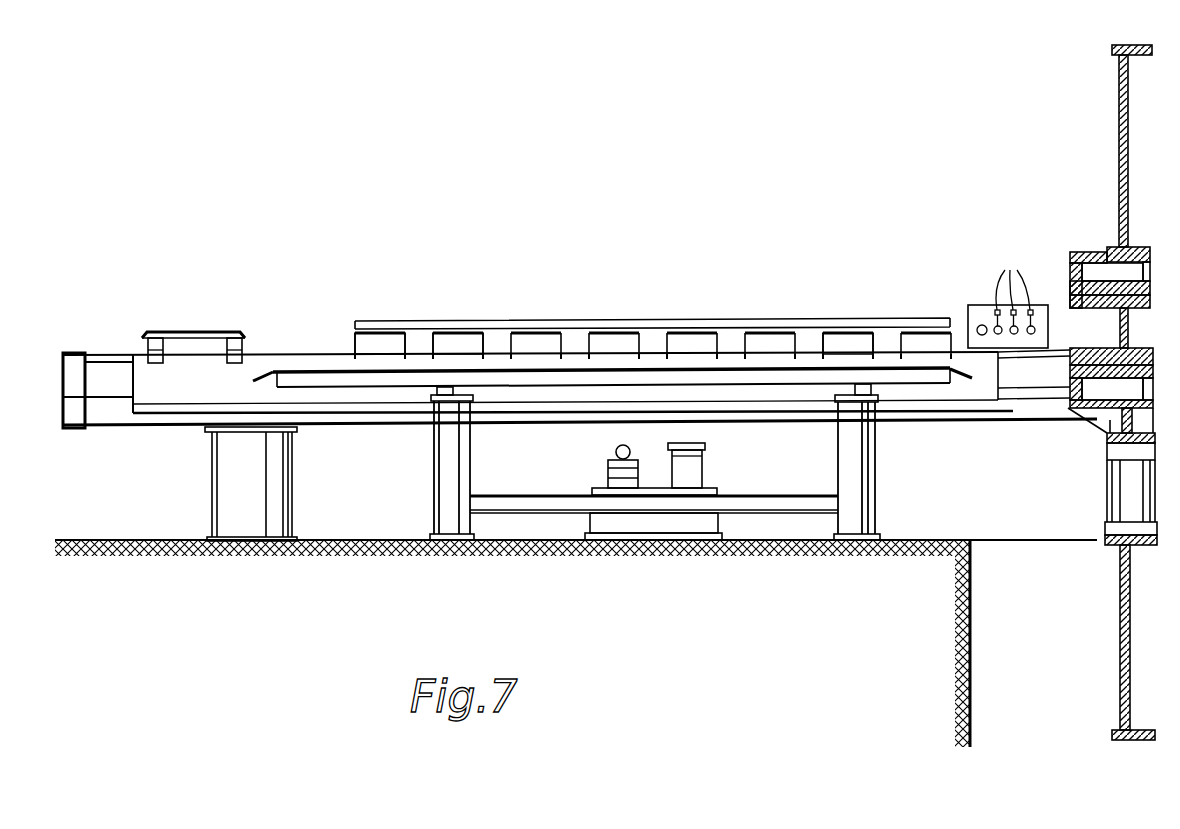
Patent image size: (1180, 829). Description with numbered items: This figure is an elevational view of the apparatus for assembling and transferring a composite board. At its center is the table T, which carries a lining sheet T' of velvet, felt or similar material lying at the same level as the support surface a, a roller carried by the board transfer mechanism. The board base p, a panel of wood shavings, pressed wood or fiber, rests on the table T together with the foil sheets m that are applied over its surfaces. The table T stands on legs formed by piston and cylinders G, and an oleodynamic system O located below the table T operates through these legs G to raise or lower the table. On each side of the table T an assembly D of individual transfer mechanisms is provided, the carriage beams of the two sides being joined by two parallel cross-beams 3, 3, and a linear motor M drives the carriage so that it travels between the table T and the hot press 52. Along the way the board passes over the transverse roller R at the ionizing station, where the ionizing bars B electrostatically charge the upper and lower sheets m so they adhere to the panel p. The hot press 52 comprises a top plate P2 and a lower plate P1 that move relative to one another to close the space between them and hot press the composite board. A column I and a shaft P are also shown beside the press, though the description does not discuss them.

The cross-beams 3 is at (154, 332).
The table T is at (580, 367).
The sheet lining T' is at (612, 335).
The assembly of transfer mechanisms D is at (455, 321).
The board base p is at (645, 328).
The foil sheet m is at (750, 330).
The support surface a is at (842, 333).
The transverse roller R is at (983, 326).
The ionizing bars B is at (1013, 275).
The hot press 52 is at (1118, 100).
The top plate P2 is at (1073, 250).
The lower plate P1 is at (1068, 413).
The column I is at (1120, 495).
The lower shaft P is at (1120, 590).
The linear motor M is at (913, 418).
The piston and cylinders G is at (462, 525).
The oleodynamic system O is at (655, 525).